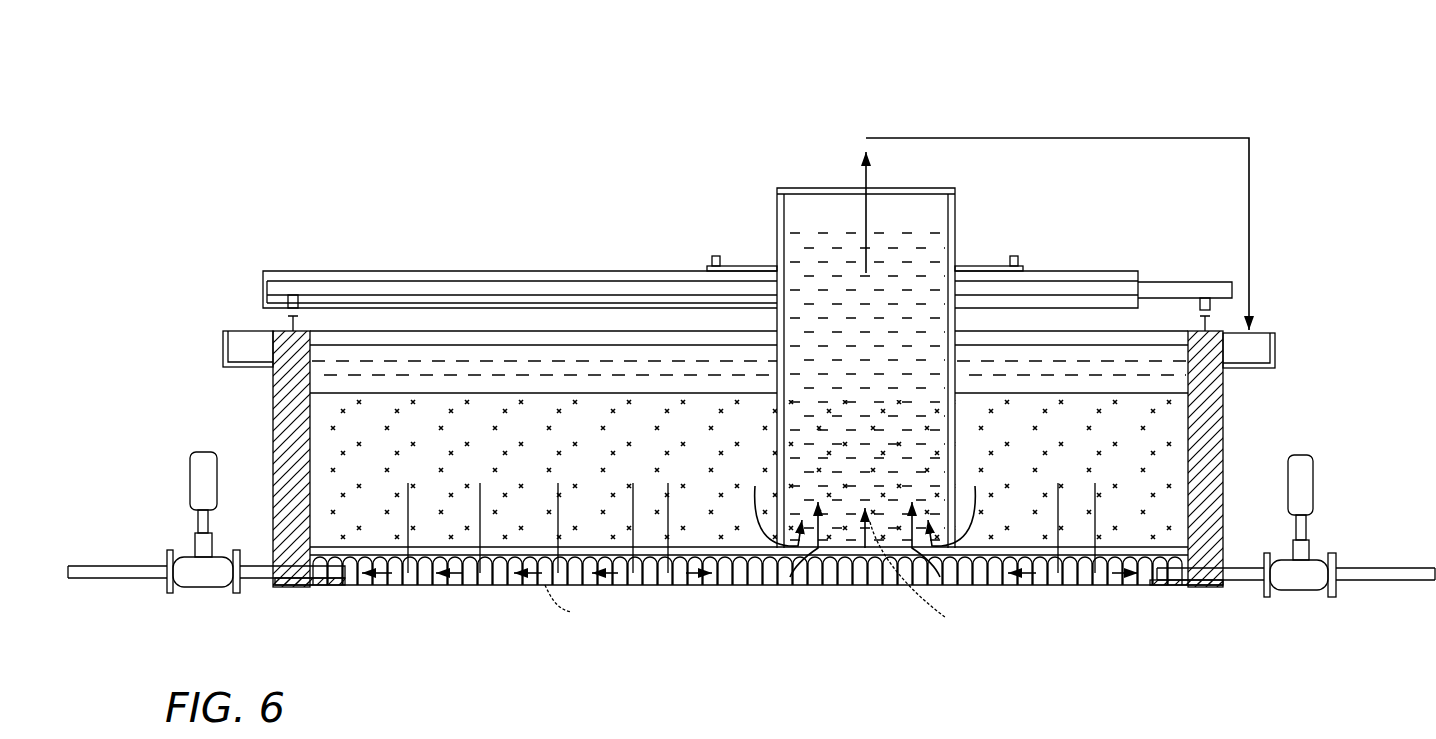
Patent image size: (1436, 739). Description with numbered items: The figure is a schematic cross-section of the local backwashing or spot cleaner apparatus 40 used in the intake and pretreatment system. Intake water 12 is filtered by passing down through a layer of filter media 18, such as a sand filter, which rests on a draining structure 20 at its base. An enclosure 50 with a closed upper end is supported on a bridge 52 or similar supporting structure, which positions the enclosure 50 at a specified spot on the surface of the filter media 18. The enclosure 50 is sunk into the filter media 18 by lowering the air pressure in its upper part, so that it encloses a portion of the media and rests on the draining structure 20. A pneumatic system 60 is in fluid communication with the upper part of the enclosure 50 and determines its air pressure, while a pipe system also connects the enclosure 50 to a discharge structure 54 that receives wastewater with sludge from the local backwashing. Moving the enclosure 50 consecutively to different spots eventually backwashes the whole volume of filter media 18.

The local backwashing apparatus 40 is at (1268, 73).
The intake water 12 is at (340, 358).
The filter media 18 is at (318, 448).
The draining structure 20 is at (415, 590).
The enclosure 50 is at (808, 249).
The bridge 52 is at (514, 270).
The discharge structure 54 is at (1278, 345).
The pneumatic system 60 is at (170, 553).